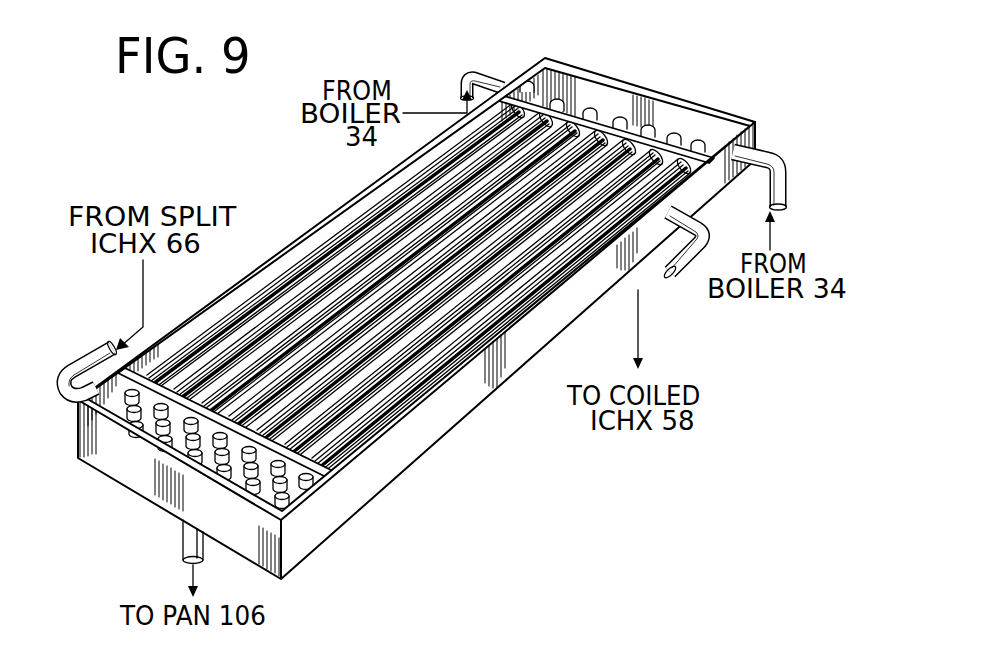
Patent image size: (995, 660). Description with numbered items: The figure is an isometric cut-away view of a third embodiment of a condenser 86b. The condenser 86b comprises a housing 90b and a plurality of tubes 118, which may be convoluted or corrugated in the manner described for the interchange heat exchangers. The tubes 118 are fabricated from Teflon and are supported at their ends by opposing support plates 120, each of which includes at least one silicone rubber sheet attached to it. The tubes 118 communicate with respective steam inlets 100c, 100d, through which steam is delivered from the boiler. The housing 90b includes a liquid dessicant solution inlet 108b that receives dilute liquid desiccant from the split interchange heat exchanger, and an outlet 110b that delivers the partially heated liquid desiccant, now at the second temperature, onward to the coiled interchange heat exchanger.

The condenser 86b is at (408, 300).
The housing 90b is at (373, 487).
The steam inlet 100c is at (777, 157).
The steam inlet 100d is at (497, 72).
The liquid dessicant solution inlet 108b is at (88, 368).
The outlet 110b is at (660, 275).
The tubes 118 is at (700, 150).
The support plates 120 is at (567, 123).